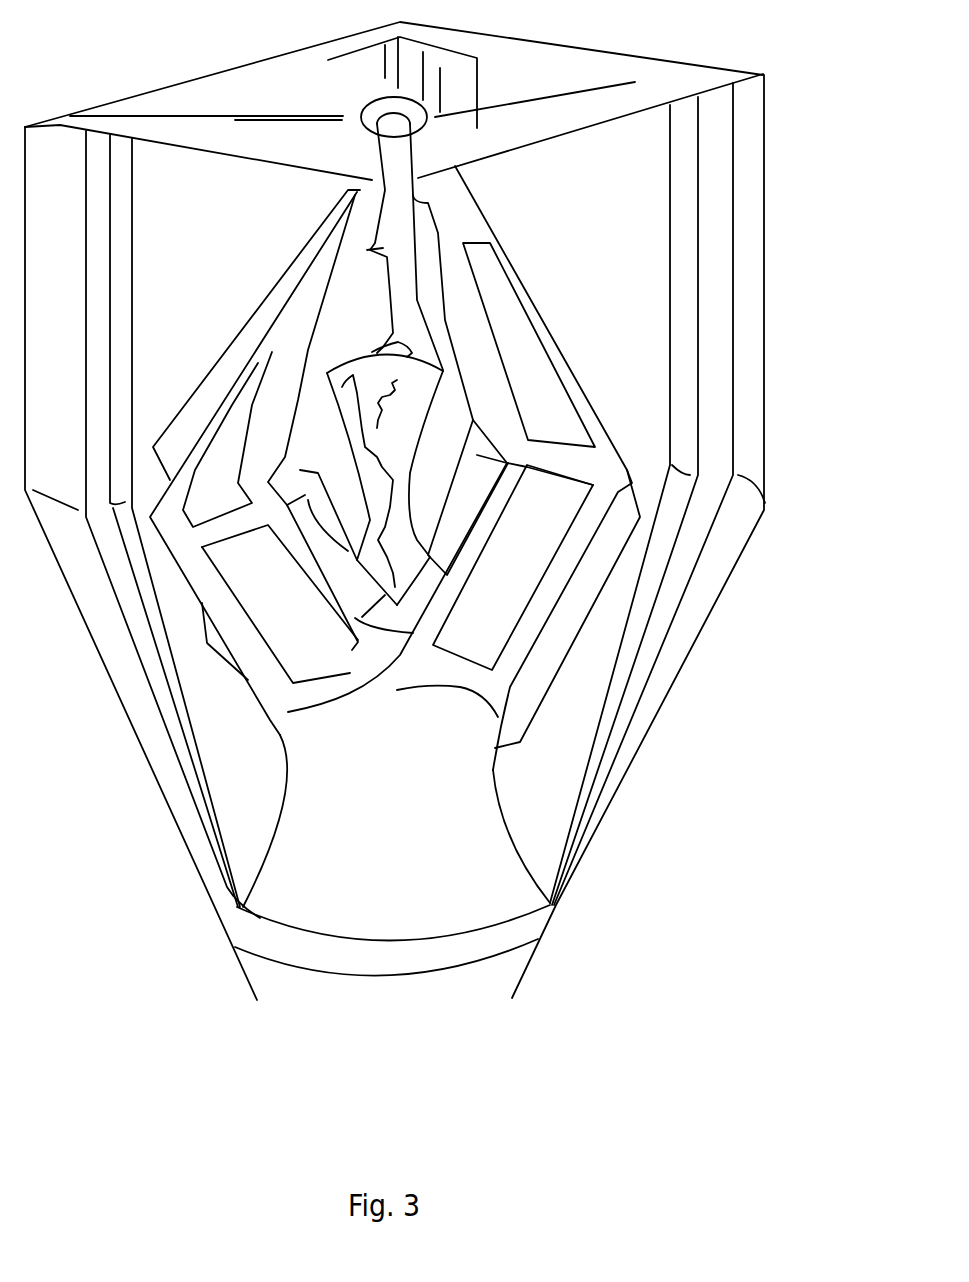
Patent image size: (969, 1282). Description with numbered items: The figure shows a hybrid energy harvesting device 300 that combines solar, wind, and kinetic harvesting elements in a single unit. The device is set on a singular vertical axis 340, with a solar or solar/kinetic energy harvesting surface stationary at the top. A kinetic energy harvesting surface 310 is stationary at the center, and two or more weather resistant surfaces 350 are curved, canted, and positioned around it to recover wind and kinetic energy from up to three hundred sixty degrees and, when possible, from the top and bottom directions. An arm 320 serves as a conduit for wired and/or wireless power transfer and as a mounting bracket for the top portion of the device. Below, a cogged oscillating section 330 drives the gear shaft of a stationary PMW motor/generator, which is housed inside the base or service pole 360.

The hybrid energy harvesting device 300 is at (429, 538).
The kinetic energy harvesting surface 310 is at (400, 448).
The arm 320 is at (765, 433).
The cogged oscillating section 330 is at (480, 790).
The singular vertical axis 340 is at (590, 66).
The weather resistant surfaces 350 is at (563, 408).
The base or service pole 360 is at (525, 937).